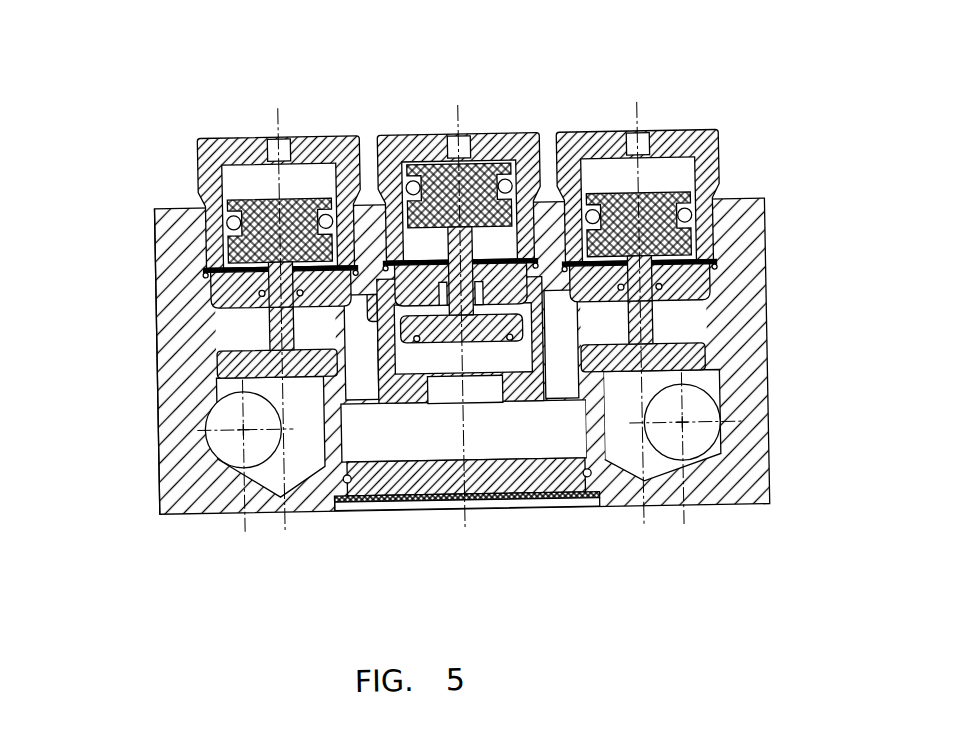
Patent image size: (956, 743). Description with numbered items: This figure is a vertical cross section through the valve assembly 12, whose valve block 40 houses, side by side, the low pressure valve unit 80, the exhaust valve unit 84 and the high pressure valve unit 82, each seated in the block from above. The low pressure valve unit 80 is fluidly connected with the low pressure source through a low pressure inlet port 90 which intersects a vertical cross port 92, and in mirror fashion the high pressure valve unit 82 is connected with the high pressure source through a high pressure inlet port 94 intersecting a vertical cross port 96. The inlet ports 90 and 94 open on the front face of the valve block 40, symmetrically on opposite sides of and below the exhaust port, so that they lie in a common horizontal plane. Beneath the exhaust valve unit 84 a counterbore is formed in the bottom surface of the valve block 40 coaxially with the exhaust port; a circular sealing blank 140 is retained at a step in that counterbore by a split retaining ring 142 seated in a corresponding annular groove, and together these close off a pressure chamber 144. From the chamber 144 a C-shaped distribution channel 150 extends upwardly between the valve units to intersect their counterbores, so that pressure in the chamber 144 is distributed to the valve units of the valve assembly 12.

The valve assembly 12 is at (770, 248).
The valve block 40 is at (156, 293).
The low pressure valve unit 80 is at (194, 136).
The high pressure valve unit 82 is at (694, 132).
The exhaust valve unit 84 is at (429, 134).
The low pressure inlet port 90 is at (221, 432).
The vertical cross port 92 is at (319, 503).
The high pressure inlet port 94 is at (696, 446).
The vertical cross port 96 is at (611, 453).
The circular sealing blank 140 is at (498, 478).
The split retaining ring 142 is at (352, 501).
The pressure chamber 144 is at (416, 452).
The C-shaped distribution channel 150 is at (355, 326).